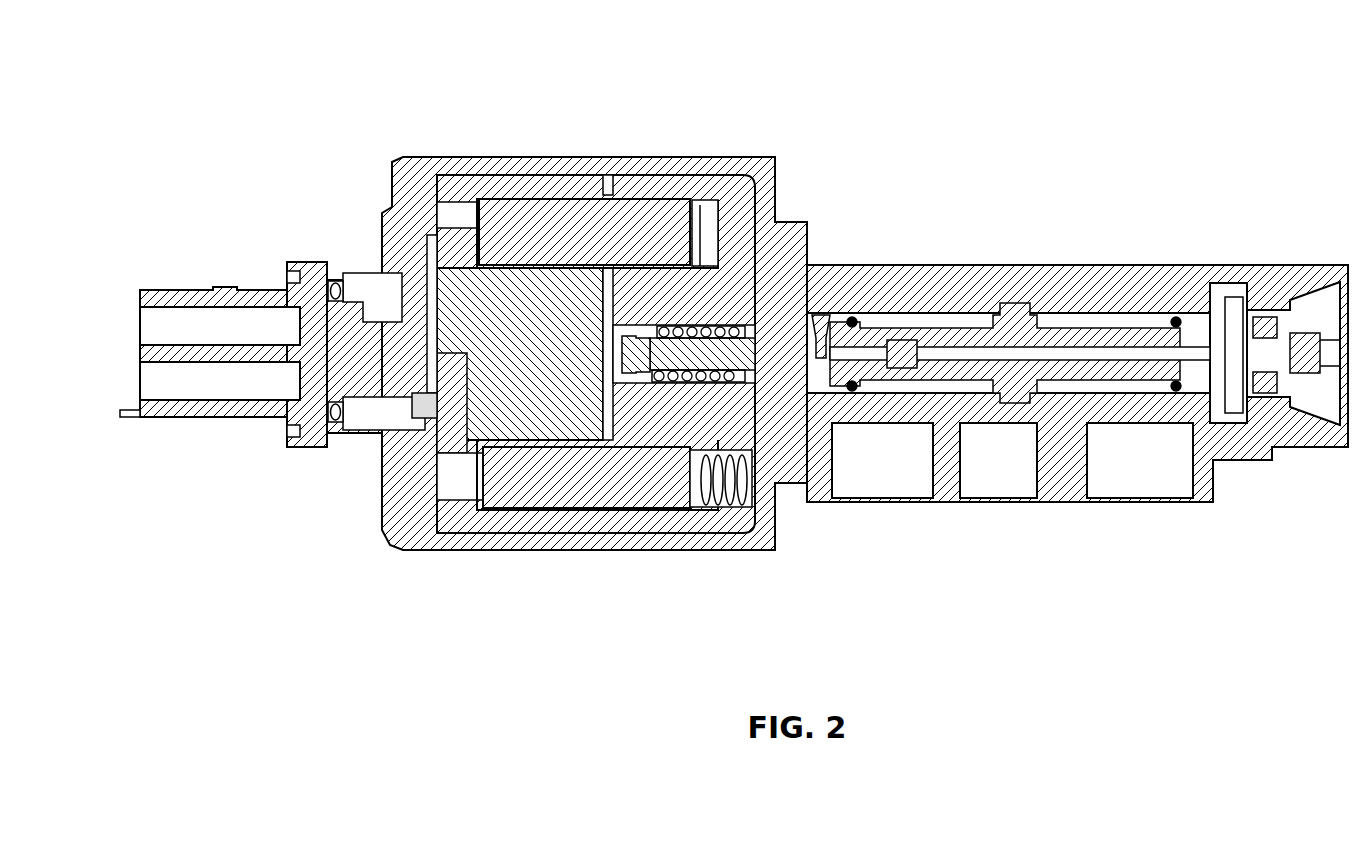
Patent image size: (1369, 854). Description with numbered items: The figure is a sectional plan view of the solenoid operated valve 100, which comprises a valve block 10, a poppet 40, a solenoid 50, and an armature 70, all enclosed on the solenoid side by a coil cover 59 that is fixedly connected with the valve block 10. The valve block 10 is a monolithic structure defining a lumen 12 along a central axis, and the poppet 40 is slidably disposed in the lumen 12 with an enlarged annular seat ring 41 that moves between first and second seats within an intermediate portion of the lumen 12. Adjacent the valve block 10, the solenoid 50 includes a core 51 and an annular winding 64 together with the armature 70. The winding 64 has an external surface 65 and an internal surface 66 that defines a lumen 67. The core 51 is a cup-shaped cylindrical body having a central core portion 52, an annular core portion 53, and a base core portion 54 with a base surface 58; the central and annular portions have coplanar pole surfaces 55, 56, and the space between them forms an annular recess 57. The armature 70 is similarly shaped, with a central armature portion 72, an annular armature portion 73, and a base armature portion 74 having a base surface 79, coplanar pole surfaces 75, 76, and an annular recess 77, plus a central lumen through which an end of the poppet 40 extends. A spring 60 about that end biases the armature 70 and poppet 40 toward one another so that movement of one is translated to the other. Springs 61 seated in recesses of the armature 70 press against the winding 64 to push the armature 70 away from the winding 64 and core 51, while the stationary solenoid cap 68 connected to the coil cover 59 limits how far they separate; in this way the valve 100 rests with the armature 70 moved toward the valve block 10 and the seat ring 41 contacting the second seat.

The solenoid operated valve 100 is at (218, 88).
The valve block 10 is at (1096, 277).
The lumen 12 is at (1050, 390).
The poppet 40 is at (932, 370).
The seat ring 41 is at (1025, 300).
The solenoid 50 is at (492, 562).
The core 51 is at (487, 398).
The central core portion 52 is at (382, 218).
The annular core portion 53 is at (500, 185).
The base core portion 54 is at (548, 432).
The pole surface 55 is at (610, 422).
The pole surface 56 is at (590, 177).
The annular recess 57 is at (478, 280).
The base surface 58 is at (437, 340).
The coil cover 59 is at (535, 552).
The spring 60 is at (762, 318).
The spring 61 is at (750, 510).
The annular winding 64 is at (573, 483).
The external surface 65 is at (520, 200).
The internal surface 66 is at (670, 198).
The lumen 67 is at (664, 275).
The solenoid cap 68 is at (393, 485).
The armature 70 is at (712, 520).
The central armature portion 72 is at (604, 305).
The annular armature portion 73 is at (713, 183).
The base armature portion 74 is at (778, 440).
The pole surface 75 is at (622, 425).
The pole surface 76 is at (632, 176).
The annular recess 77 is at (770, 275).
The base surface 79 is at (832, 420).